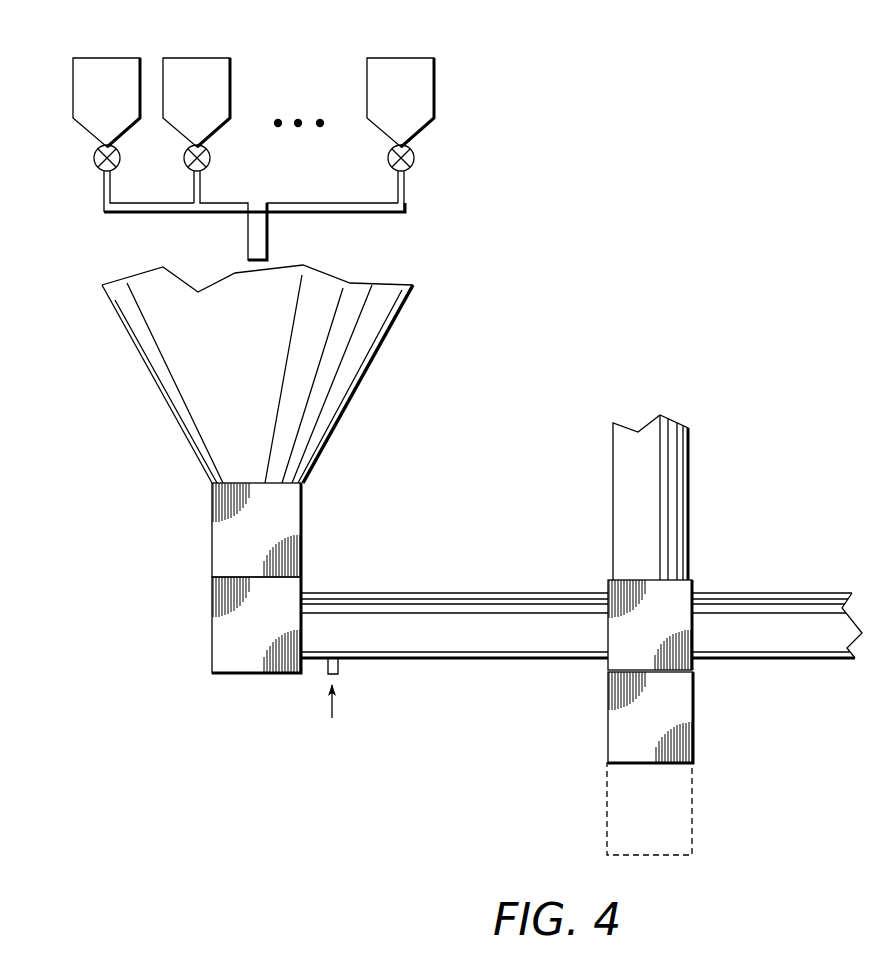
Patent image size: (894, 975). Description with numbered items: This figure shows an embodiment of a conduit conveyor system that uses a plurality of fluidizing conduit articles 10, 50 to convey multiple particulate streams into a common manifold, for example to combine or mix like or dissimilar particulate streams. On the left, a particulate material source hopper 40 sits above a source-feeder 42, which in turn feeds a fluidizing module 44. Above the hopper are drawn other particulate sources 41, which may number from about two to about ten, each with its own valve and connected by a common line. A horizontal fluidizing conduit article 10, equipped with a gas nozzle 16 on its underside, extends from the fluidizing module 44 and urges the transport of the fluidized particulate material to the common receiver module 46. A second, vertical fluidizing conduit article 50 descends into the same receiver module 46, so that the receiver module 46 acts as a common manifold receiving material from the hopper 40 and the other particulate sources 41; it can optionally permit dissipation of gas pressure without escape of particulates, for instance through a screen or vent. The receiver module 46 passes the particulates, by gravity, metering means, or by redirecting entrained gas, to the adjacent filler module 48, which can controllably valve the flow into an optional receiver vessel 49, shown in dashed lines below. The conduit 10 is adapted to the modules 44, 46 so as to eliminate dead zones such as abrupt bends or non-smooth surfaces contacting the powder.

The fluidizing conduit article 10 is at (538, 579).
The gas nozzle 16 is at (347, 680).
The particulate material source hopper 40 is at (411, 352).
The other particulate sources 41 is at (468, 88).
The source-feeder 42 is at (314, 532).
The fluidizing module 44 is at (199, 645).
The common receiver module 46 is at (606, 662).
The filler module 48 is at (699, 728).
The receiver vessel 49 is at (699, 818).
The fluidizing conduit article 50 is at (779, 589).